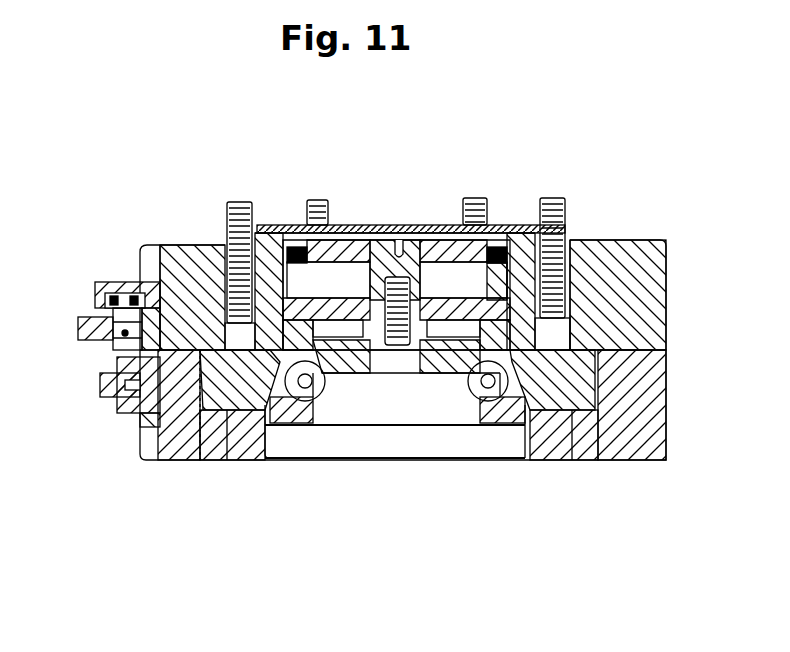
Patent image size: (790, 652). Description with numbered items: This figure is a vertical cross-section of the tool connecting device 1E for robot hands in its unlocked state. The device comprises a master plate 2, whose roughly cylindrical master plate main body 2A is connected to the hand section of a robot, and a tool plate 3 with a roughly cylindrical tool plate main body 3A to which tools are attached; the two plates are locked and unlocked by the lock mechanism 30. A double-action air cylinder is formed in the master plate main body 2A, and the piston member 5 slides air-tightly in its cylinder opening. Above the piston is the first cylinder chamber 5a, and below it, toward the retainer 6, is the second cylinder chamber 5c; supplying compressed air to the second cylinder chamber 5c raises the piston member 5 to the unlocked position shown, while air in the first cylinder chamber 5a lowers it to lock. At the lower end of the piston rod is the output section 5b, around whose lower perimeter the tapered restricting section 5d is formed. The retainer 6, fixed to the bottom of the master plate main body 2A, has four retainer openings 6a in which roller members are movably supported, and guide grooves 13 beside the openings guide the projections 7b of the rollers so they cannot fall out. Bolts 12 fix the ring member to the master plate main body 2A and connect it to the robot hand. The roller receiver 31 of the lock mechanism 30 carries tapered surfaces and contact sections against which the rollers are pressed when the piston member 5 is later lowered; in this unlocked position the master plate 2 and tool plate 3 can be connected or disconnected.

The tool connecting device 1E is at (150, 188).
The master plate 2 is at (212, 212).
The master plate main body 2A is at (150, 256).
The tool plate 3 is at (208, 477).
The tool plate main body 3A is at (143, 460).
The piston member 5 is at (338, 225).
The first cylinder chamber 5a is at (400, 228).
The output section 5b is at (440, 375).
The second cylinder chamber 5c is at (448, 277).
The tapered restricting section 5d is at (475, 385).
The retainer 6 is at (322, 425).
The retainer openings 6a is at (513, 297).
The projection 7b is at (313, 223).
The bolts 12 is at (237, 202).
The guide grooves 13 is at (333, 390).
The lock mechanism 30 is at (330, 433).
The roller receiver 31 is at (600, 340).